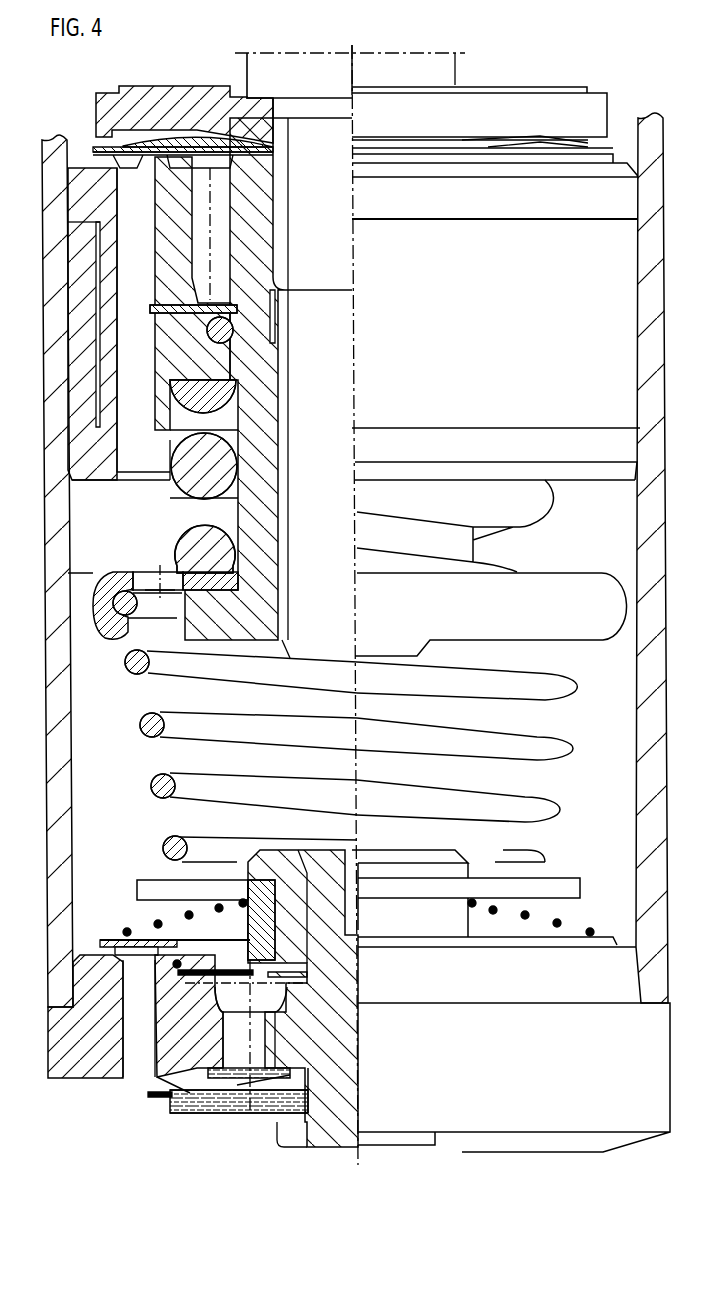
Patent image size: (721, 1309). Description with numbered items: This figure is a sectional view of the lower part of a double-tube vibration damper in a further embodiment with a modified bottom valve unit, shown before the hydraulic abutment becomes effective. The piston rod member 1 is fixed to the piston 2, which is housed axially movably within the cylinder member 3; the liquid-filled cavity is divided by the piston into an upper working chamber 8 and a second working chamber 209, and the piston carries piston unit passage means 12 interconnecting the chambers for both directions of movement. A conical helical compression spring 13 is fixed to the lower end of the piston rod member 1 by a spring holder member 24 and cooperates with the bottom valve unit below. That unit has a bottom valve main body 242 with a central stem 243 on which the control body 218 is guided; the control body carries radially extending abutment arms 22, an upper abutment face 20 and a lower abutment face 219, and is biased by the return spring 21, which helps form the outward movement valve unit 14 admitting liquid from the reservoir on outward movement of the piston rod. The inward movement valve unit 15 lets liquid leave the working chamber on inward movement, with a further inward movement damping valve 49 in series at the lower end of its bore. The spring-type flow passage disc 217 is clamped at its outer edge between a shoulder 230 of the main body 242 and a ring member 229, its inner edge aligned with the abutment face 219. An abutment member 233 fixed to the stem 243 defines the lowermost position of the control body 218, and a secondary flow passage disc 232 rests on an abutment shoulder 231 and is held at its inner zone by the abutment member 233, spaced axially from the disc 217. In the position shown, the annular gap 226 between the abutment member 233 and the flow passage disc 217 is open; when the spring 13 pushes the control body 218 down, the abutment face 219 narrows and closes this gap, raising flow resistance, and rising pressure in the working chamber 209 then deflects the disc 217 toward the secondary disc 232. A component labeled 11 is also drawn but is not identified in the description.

The piston rod member 1 is at (447, 70).
The piston unit 2 is at (82, 186).
The cylinder member 3 is at (52, 258).
The working chamber 8 is at (200, 76).
The diaphragm 11 is at (87, 138).
The piston unit passage means 12 is at (155, 375).
The conical helical compression spring 13 is at (130, 668).
The outward movement valve unit 14 is at (88, 935).
The inward movement valve unit 15 is at (170, 1122).
The upper abutment face 20 is at (268, 885).
The return spring 21 is at (150, 925).
The abutment arms 22 is at (140, 890).
The spring holder member 24 is at (95, 598).
The inward movement damping valve 49 is at (200, 1115).
The second working chamber 209 is at (148, 532).
The flow passage disc 217 is at (178, 1002).
The control body 218 is at (260, 895).
The abutment face 219 is at (270, 912).
The gap 226 is at (168, 1093).
The ring member 229 is at (174, 965).
The shoulder 230 is at (190, 980).
The abutment shoulder 231 is at (120, 1080).
The secondary flow passage disc 232 is at (143, 1080).
The abutment member 233 is at (268, 1100).
The bottom valve main body 242 is at (65, 1045).
The stem 243 is at (330, 1130).